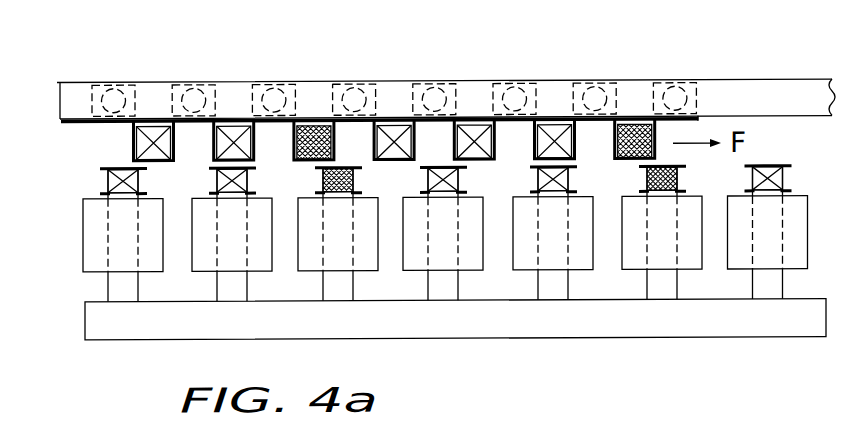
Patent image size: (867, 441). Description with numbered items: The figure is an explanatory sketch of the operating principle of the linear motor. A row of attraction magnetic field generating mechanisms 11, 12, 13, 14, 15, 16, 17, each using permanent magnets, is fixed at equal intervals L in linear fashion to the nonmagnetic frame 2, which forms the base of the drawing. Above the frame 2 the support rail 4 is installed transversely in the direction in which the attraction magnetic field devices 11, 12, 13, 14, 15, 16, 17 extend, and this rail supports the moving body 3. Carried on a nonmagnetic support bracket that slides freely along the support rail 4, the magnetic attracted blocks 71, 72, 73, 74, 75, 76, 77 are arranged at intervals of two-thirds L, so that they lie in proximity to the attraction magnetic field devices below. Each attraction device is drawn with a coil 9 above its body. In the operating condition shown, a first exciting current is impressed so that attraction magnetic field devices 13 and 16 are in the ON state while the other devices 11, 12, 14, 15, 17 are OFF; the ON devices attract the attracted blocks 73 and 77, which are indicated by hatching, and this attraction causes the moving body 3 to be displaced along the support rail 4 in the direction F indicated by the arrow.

The nonmagnetic frame 2 is at (775, 323).
The moving body 3 is at (124, 144).
The support rail 4 is at (757, 97).
The coil 9 is at (115, 181).
The attraction magnetic field generating mechanism 11 is at (88, 249).
The attraction magnetic field generating mechanism 12 is at (203, 263).
The attraction magnetic field generating mechanism 13 is at (309, 263).
The attraction magnetic field generating mechanism 14 is at (414, 263).
The attraction magnetic field generating mechanism 15 is at (524, 263).
The attraction magnetic field generating mechanism 16 is at (633, 263).
The attraction magnetic field generating mechanism 17 is at (738, 263).
The magnetic attracted block 71 is at (150, 127).
The magnetic attracted block 72 is at (231, 127).
The magnetic attracted block 73 is at (311, 127).
The magnetic attracted block 74 is at (391, 127).
The magnetic attracted block 75 is at (471, 127).
The magnetic attracted block 76 is at (552, 127).
The magnetic attracted block 77 is at (632, 127).